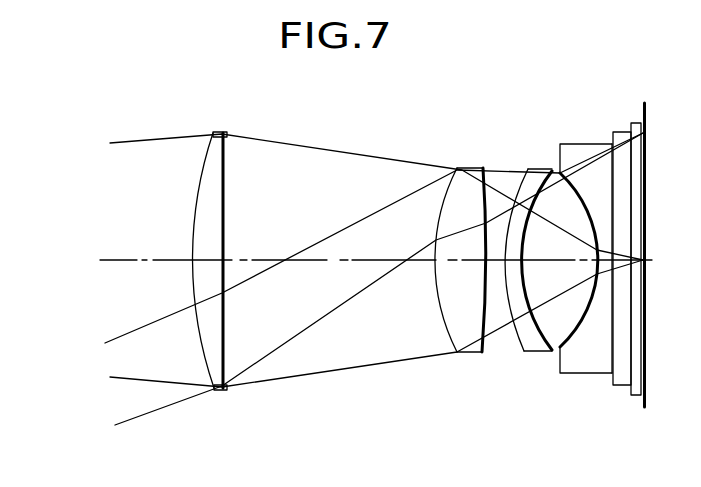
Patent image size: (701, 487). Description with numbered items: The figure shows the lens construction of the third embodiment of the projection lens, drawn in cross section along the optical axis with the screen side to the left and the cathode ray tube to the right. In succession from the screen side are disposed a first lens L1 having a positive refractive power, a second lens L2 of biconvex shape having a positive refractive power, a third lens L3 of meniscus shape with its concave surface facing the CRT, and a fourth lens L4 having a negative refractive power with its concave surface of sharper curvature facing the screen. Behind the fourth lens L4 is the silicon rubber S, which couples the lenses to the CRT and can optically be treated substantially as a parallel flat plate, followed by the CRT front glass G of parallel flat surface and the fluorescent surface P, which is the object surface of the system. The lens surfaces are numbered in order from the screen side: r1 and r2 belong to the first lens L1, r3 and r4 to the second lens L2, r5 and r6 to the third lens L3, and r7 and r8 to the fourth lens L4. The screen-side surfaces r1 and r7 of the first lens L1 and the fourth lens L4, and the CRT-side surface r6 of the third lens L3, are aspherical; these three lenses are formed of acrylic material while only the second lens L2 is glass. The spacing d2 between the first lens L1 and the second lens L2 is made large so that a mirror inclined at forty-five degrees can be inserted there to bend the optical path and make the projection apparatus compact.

The first lens L1 is at (228, 260).
The second lens L2 is at (439, 246).
The third lens L3 is at (523, 261).
The fourth lens L4 is at (588, 273).
The silicon rubber S is at (620, 131).
The CRT front glass G is at (635, 123).
The fluorescent surface P is at (646, 141).
The spacing between the first lens and the second lens d2 is at (308, 248).
The surface of the first lens adjacent to the screen r1 is at (211, 372).
The surface of the first lens r2 is at (227, 360).
The surface of the second lens r3 is at (447, 335).
The surface of the second lens r4 is at (480, 330).
The surface of the third lens r5 is at (522, 340).
The surface of the third lens adjacent to the CRT r6 is at (546, 345).
The surface of the fourth lens adjacent to the screen r7 is at (562, 340).
The surface of the fourth lens r8 is at (609, 360).